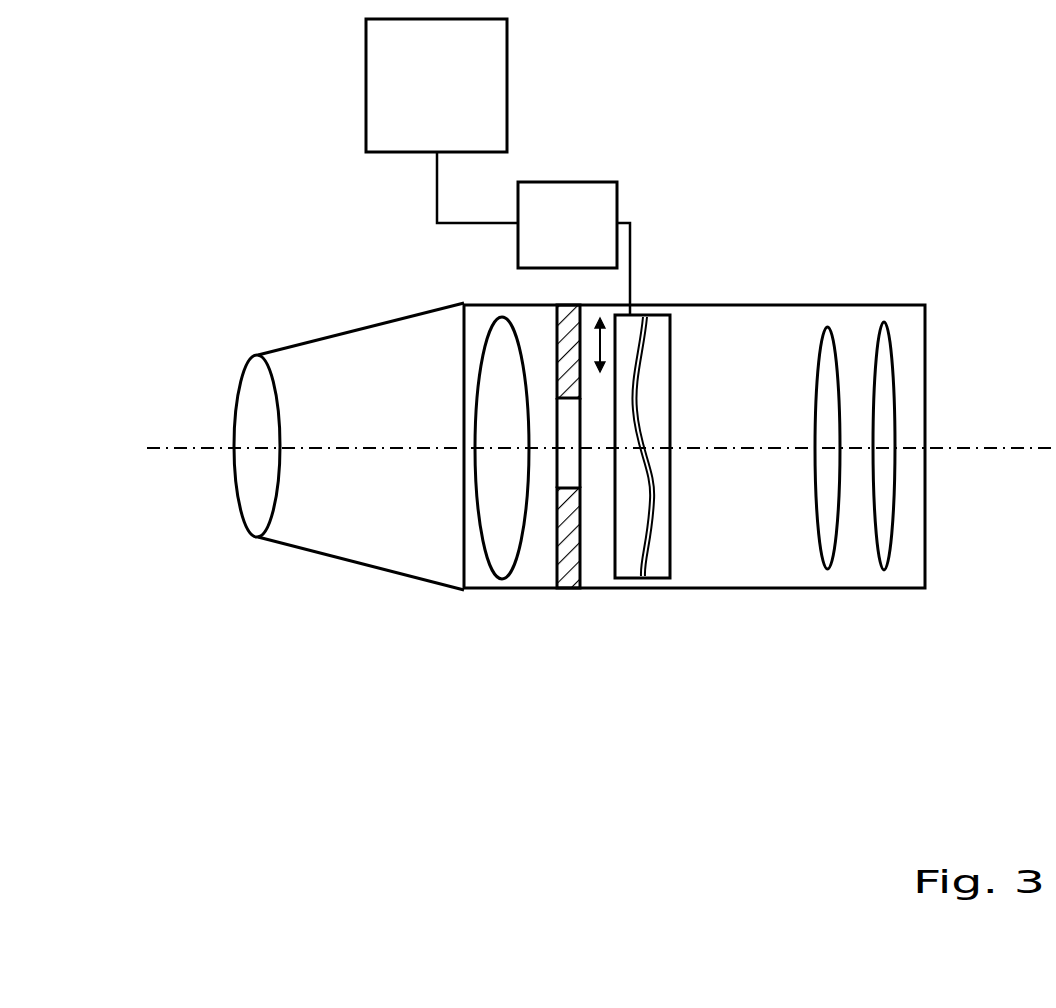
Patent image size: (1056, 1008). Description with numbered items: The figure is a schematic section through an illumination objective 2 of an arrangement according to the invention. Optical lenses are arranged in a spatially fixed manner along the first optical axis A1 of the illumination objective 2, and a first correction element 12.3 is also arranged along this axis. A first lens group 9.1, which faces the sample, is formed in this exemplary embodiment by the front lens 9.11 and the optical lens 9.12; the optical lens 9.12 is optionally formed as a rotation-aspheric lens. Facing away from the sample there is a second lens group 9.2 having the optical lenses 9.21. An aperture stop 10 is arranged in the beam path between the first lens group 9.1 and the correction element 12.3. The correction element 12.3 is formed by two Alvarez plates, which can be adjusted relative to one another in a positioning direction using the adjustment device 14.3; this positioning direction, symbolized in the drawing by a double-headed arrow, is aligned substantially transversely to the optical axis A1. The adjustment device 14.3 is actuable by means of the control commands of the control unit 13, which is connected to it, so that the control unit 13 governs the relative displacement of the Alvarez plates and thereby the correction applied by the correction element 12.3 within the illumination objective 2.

The illumination objective 2 is at (357, 328).
The first optical axis A1 is at (173, 445).
The first lens group 9.1 is at (369, 510).
The front lens 9.11 is at (238, 520).
The optical lens 9.12 is at (513, 573).
The aperture stop 10 is at (568, 588).
The first correction element 12.3 is at (652, 578).
The second lens group 9.2 is at (865, 543).
The optical lenses 9.21 is at (818, 530).
The control unit 13 is at (417, 100).
The adjustment device 14.3 is at (532, 247).